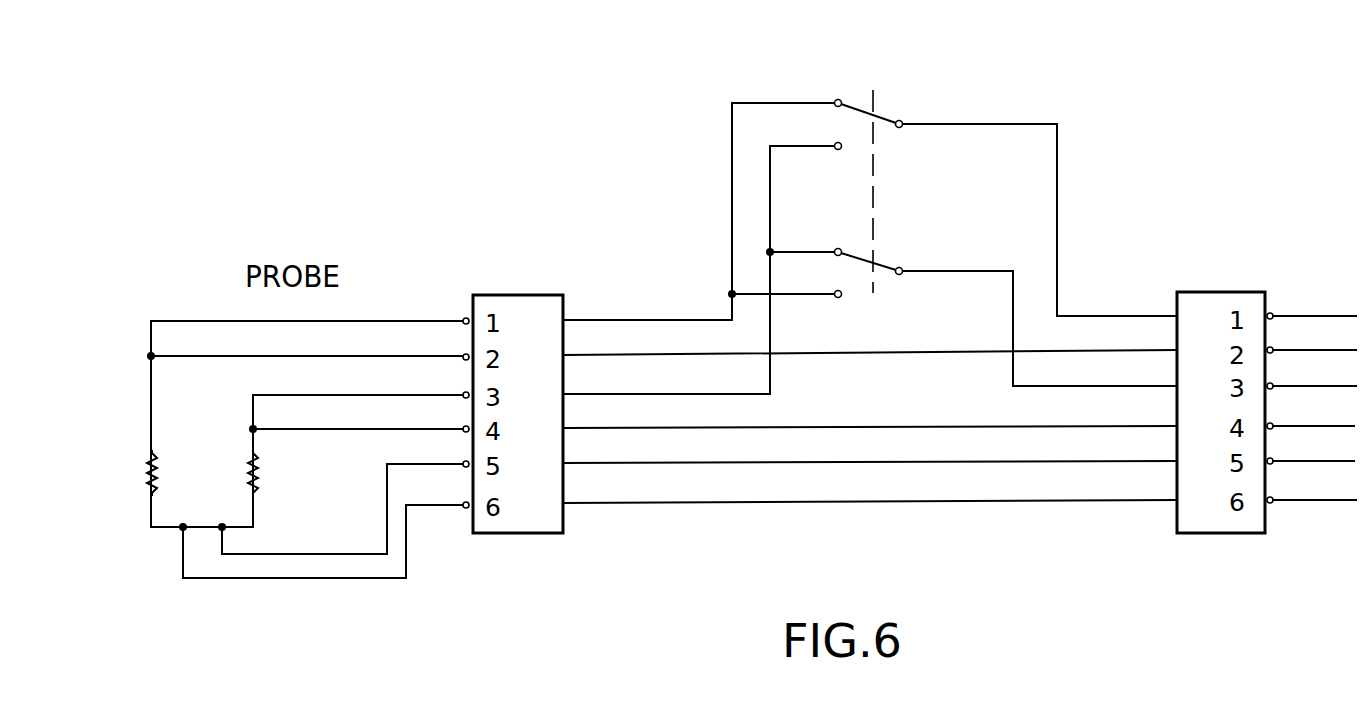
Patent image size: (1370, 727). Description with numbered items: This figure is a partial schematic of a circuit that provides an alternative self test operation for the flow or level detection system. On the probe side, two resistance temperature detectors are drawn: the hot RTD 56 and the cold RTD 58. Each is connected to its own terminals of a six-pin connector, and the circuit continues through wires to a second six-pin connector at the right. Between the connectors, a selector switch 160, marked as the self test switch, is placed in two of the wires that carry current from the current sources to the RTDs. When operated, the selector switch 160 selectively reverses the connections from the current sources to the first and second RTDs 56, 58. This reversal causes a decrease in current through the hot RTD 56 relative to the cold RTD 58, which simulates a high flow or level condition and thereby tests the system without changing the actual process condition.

The hot RTD 56 is at (149, 473).
The cold RTD 58 is at (252, 464).
The selector switch 160 is at (830, 68).